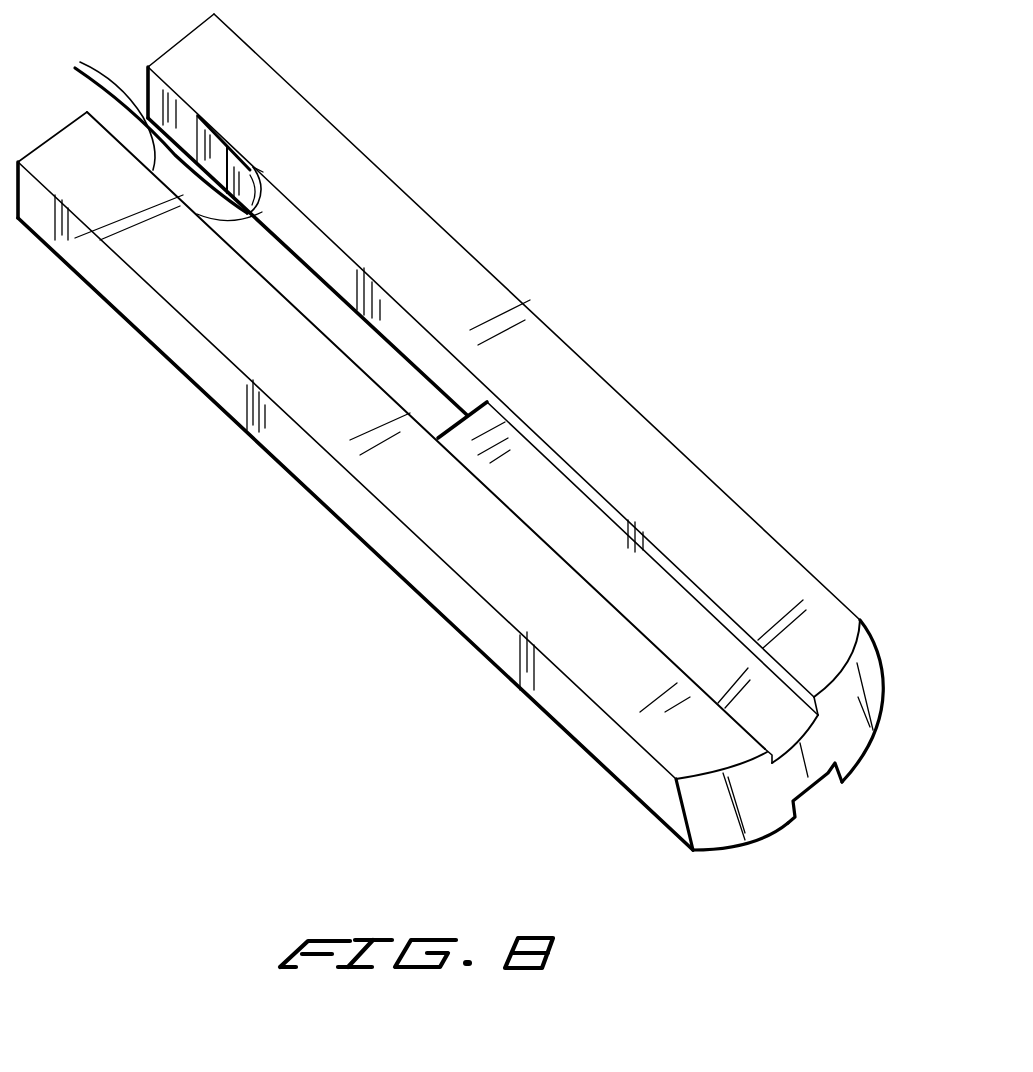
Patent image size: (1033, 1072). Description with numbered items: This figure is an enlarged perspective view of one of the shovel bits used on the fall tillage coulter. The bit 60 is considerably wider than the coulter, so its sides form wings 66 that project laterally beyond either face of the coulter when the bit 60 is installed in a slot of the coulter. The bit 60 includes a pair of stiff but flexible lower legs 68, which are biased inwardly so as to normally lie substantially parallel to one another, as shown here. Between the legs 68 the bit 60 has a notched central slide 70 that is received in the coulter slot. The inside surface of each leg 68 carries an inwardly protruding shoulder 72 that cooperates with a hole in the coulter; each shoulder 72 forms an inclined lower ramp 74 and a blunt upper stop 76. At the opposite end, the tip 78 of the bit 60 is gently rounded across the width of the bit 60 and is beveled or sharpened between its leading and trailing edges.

The bit 60 is at (548, 153).
The wing 66 is at (440, 548).
The lower leg 68 is at (455, 283).
The notched central slide 70 is at (558, 507).
The shoulder 72 is at (248, 150).
The inclined lower ramp 74 is at (95, 106).
The blunt upper stop 76 is at (270, 212).
The tip 78 is at (761, 816).